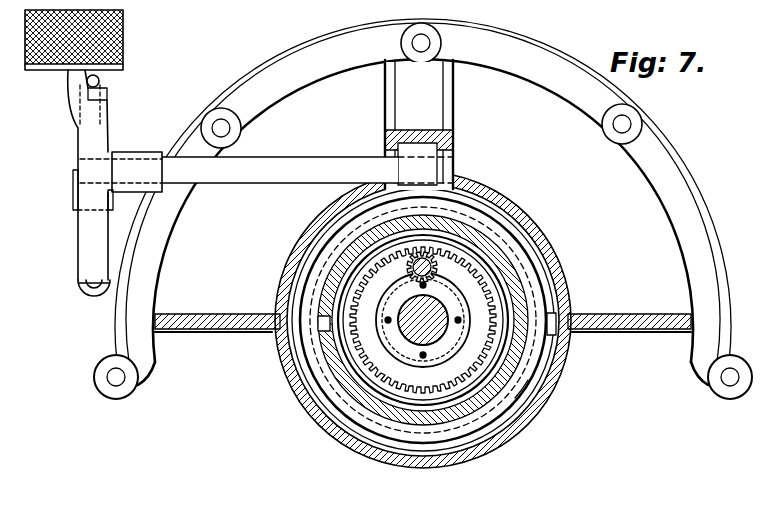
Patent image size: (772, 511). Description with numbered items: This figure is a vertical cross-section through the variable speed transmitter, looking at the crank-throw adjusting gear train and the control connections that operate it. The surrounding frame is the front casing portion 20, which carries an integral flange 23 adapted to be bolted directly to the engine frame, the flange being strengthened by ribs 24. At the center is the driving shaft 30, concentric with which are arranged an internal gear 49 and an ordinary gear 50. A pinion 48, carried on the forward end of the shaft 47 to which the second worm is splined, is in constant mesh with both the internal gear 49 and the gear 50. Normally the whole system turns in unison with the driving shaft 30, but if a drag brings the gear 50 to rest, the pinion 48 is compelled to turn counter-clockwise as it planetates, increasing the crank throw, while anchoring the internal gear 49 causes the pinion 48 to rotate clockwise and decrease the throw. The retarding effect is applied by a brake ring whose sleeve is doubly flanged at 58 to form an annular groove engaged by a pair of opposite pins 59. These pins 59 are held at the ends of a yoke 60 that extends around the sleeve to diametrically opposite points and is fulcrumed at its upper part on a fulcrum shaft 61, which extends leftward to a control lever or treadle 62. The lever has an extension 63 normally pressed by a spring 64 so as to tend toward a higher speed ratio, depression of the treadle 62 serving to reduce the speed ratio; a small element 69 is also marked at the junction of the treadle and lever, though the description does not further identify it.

The front casing portion 20 is at (522, 412).
The flange 23 is at (262, 78).
The ribs 24 is at (387, 96).
The driving shaft 30 is at (470, 283).
The shaft 47 is at (432, 258).
The pinion 48 is at (478, 275).
The internal gear 49 is at (538, 255).
The gear 50 is at (548, 373).
The flanges 58 is at (323, 361).
The studs or pins 59 is at (576, 313).
The yoke 60 is at (307, 260).
The fulcrum shaft 61 is at (328, 157).
The control lever or treadle 62 is at (124, 38).
The extension 63 is at (78, 250).
The spring 64 is at (93, 300).
The pin 69 is at (100, 80).